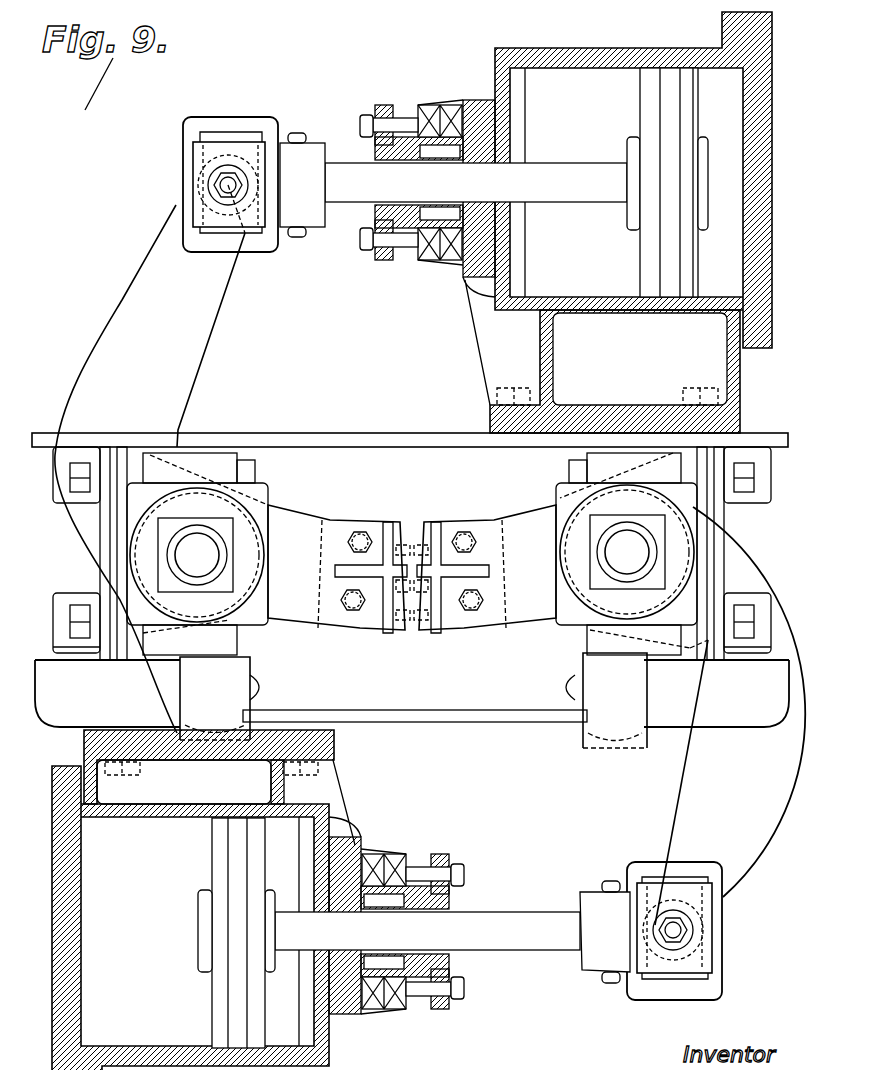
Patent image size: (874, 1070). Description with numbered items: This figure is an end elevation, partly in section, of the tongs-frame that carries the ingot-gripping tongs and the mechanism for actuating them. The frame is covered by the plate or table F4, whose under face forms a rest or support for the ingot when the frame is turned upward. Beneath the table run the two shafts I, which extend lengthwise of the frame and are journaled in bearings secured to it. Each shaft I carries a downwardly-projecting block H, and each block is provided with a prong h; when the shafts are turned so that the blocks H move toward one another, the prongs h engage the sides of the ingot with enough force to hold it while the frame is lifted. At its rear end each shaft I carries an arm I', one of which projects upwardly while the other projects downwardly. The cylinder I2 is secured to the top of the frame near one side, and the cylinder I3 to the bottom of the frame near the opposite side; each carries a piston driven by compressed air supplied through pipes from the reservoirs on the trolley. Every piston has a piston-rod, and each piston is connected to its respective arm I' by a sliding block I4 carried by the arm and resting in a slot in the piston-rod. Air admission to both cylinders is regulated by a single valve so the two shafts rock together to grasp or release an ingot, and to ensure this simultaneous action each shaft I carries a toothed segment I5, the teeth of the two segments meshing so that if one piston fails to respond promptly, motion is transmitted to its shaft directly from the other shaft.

The plate or table F4 is at (410, 426).
The cylinder I2 is at (772, 306).
The cylinder I3 is at (316, 900).
The arm I' is at (430, 555).
The sliding block I4 is at (193, 215).
The shaft I is at (412, 553).
The toothed segment I5 is at (412, 569).
The block H is at (413, 700).
The prong h is at (262, 690).